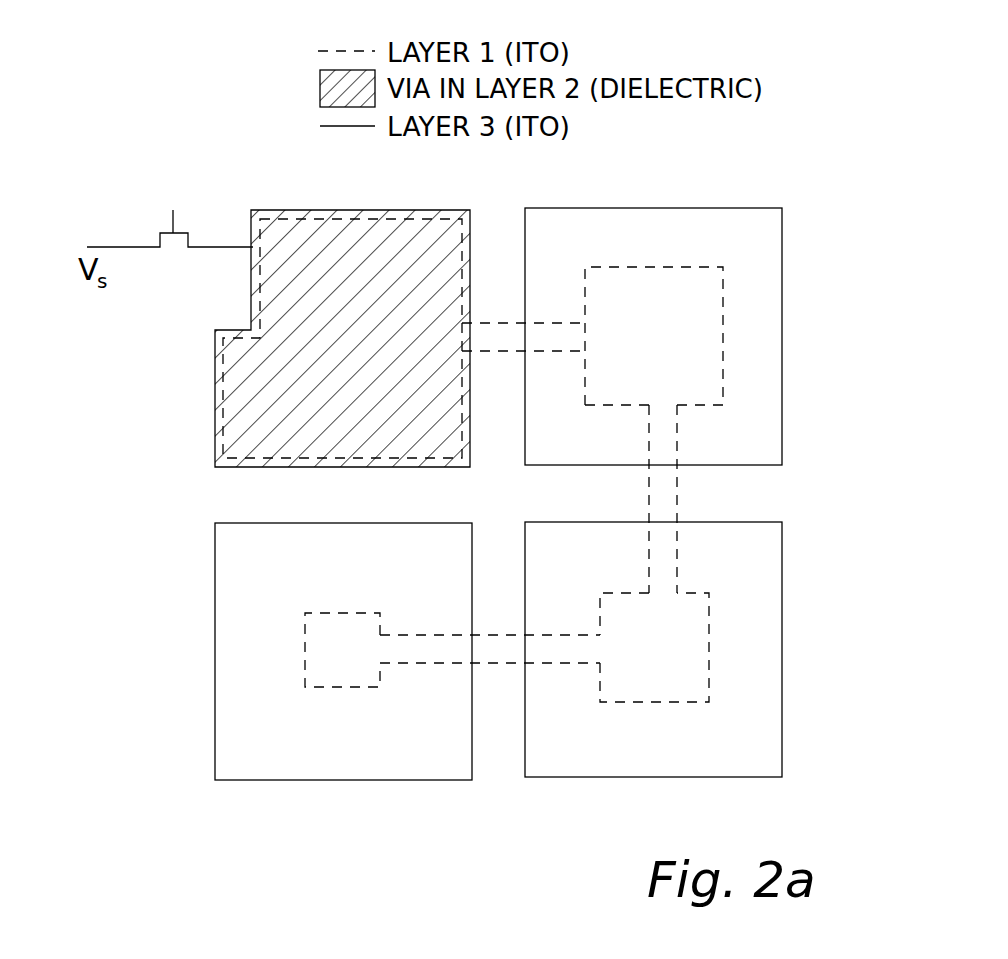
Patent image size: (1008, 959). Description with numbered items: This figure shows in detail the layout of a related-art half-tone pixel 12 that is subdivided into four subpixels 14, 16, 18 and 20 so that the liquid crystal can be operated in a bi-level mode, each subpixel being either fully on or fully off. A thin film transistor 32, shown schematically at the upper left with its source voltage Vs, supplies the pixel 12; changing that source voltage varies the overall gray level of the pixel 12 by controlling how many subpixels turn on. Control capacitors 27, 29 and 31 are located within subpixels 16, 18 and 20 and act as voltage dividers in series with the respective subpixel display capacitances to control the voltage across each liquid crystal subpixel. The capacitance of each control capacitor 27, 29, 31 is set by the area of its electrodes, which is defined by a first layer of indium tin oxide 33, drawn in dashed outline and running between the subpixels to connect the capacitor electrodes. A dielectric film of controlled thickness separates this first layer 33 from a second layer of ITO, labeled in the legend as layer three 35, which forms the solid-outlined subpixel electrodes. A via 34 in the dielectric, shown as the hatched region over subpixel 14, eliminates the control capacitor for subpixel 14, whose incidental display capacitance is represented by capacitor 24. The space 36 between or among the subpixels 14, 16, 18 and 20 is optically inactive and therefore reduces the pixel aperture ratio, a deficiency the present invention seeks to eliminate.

The half-tone pixel 12 is at (762, 173).
The subpixel 14 is at (362, 346).
The subpixel 16 is at (766, 259).
The subpixel 18 is at (756, 574).
The subpixel 20 is at (459, 576).
The capacitor 24 is at (418, 467).
The control capacitor 27 is at (671, 352).
The control capacitor 29 is at (359, 666).
The control capacitor 31 is at (671, 664).
The thin film transistor 32 is at (180, 235).
The first layer of indium tin oxide 33 is at (320, 50).
The via 34 is at (320, 86).
The layer 3 (ITO) electrode 35 is at (320, 126).
The space 36 is at (516, 426).